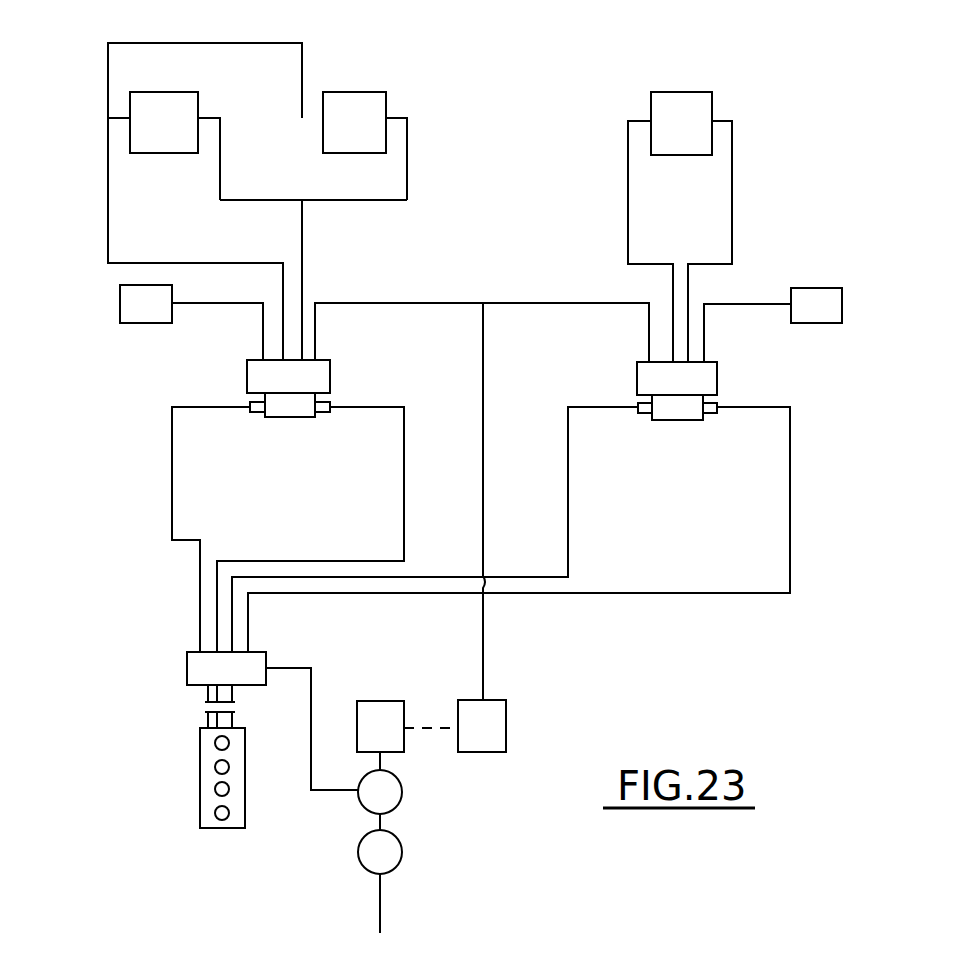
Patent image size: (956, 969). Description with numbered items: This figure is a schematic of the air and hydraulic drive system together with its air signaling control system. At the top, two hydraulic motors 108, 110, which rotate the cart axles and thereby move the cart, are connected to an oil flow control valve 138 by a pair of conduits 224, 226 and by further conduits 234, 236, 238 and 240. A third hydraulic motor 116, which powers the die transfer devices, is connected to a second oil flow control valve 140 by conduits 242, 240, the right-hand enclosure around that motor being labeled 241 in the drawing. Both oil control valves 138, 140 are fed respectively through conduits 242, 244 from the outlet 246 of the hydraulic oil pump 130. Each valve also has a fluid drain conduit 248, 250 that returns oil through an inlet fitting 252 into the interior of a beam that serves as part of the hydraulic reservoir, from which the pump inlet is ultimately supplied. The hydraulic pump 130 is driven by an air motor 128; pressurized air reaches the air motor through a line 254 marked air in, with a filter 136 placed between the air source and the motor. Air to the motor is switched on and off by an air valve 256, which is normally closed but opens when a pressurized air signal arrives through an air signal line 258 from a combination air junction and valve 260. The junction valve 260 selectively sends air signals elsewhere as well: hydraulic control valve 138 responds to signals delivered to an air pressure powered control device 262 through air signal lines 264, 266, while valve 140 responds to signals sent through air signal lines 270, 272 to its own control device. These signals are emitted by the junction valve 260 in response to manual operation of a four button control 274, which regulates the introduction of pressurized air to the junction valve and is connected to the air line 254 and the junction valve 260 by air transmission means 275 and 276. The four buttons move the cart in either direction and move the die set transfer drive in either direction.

The hydraulic motor 108 is at (372, 92).
The hydraulic motor 110 is at (170, 92).
The hydraulic motor 116 is at (710, 92).
The air motor 128 is at (372, 700).
The hydraulic oil pump 130 is at (502, 700).
The filter 136 is at (402, 850).
The oil flow control valve 138 is at (317, 360).
The oil flow control valve 140 is at (710, 362).
The conduit 224 is at (303, 238).
The conduit 226 is at (107, 228).
The conduit 234 is at (263, 202).
The conduit 236 is at (120, 120).
The conduit 238 is at (408, 182).
The conduit 240 is at (230, 43).
The air line 241 is at (627, 177).
The conduit 242 is at (425, 301).
The conduit 244 is at (553, 301).
The outlet 246 is at (484, 640).
The fluid drain conduit 248 is at (237, 305).
The fluid drain conduit 250 is at (747, 300).
The inlet fitting 252 is at (807, 290).
The air line 254 is at (380, 885).
The air valve 256 is at (402, 790).
The air signal line 258 is at (345, 792).
The combination air junction and valve 260 is at (190, 663).
The air pressure powered control device 262 is at (302, 417).
The air signal line 264 is at (404, 427).
The air signal line 266 is at (170, 442).
The air signal line 270 is at (792, 483).
The air signal line 272 is at (570, 483).
The four button control 274 is at (207, 777).
The air transmission means 275 is at (207, 713).
The air transmission means 276 is at (233, 703).